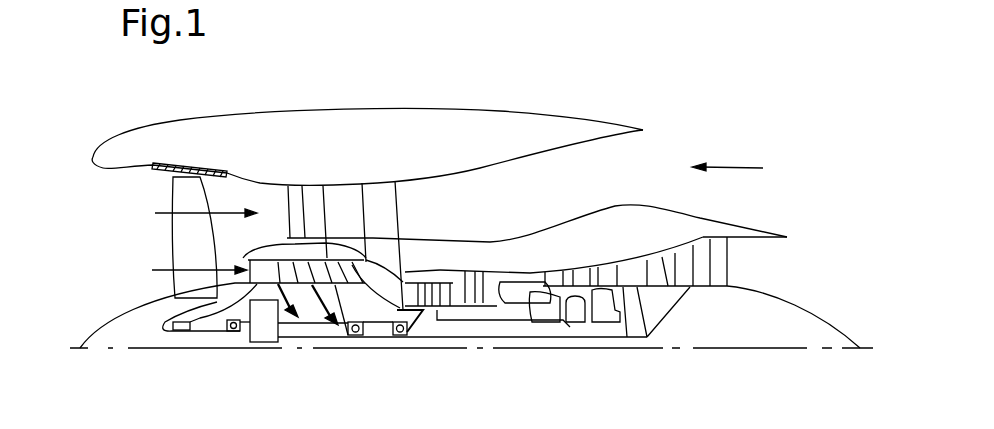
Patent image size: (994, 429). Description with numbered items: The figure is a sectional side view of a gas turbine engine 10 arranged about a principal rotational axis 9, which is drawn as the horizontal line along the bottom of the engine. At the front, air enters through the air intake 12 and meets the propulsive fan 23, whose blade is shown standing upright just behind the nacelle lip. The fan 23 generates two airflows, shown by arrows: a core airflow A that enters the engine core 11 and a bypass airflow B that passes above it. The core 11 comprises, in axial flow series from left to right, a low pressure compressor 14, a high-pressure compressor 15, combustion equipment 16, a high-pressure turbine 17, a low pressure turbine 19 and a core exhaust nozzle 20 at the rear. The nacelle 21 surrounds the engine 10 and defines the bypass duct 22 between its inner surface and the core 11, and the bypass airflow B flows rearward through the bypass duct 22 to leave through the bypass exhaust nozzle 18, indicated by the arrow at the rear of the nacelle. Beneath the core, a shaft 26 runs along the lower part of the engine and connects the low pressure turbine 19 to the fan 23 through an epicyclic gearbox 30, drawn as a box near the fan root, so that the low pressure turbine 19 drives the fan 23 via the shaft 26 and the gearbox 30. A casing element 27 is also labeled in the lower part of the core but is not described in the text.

The principal rotational axis 9 is at (695, 348).
The gas turbine engine 10 is at (160, 127).
The core 11 is at (510, 248).
The air intake 12 is at (108, 203).
The low pressure compressor 14 is at (323, 186).
The high-pressure compressor 15 is at (452, 282).
The combustion equipment 16 is at (533, 295).
The high-pressure turbine 17 is at (577, 282).
The bypass exhaust nozzle 18 is at (743, 171).
The low pressure turbine 19 is at (702, 252).
The core exhaust nozzle 20 is at (763, 270).
The nacelle 21 is at (387, 125).
The bypass duct 22 is at (620, 181).
The propulsive fan 23 is at (178, 243).
The shaft 26 is at (453, 337).
The casing shelf 27 is at (490, 325).
The epicyclic gearbox 30 is at (265, 322).